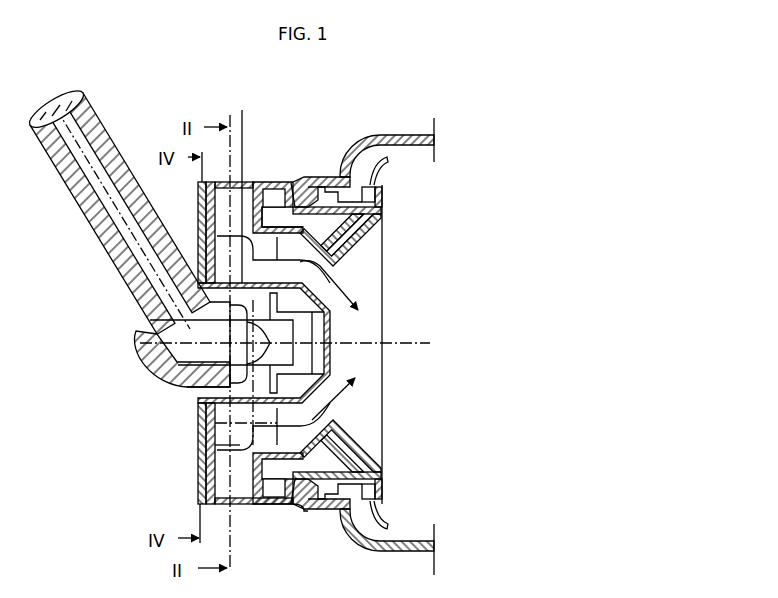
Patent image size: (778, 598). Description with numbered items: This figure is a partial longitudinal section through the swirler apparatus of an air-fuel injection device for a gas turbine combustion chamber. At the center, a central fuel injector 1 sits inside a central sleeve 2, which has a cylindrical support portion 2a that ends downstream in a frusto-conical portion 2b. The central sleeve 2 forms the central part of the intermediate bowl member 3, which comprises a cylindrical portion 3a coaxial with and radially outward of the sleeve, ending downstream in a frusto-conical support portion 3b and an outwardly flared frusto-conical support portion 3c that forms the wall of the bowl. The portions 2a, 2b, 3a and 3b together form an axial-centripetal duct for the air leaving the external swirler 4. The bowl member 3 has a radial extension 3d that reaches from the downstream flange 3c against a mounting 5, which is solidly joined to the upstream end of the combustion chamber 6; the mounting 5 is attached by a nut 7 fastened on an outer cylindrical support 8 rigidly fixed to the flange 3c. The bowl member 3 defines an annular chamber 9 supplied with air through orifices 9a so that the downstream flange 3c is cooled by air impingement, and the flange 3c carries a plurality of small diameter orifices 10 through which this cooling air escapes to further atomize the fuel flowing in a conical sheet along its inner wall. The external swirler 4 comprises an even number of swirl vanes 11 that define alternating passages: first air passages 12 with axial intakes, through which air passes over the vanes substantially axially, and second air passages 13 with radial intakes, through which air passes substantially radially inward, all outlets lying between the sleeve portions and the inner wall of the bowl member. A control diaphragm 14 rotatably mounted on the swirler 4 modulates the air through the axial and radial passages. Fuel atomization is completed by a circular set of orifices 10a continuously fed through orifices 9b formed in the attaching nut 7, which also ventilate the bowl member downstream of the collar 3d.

The central fuel injector 1 is at (245, 347).
The central sleeve 2 is at (198, 485).
The cylindrical support portion 2a is at (196, 402).
The frusto-conical portion 2b is at (350, 296).
The intermediate bowl member 3 is at (384, 380).
The cylindrical portion 3a is at (283, 510).
The frusto-conical support portion 3b is at (350, 437).
The outwardly flared frusto-conical support portion 3c is at (373, 463).
The radial extension 3d is at (386, 207).
The external swirler 4 is at (226, 442).
The mounting 5 is at (385, 200).
The combustion chamber 6 is at (381, 134).
The nut 7 is at (297, 513).
The outer cylindrical support 8 is at (313, 513).
The annular chamber 9 is at (295, 223).
The orifices 9a is at (268, 181).
The orifices 9b is at (301, 181).
The small diameter orifices 10 is at (357, 236).
The circular set of orifices 10a is at (384, 218).
The swirl vanes 11 is at (196, 192).
The first air passages 12 is at (197, 424).
The second air passages 13 is at (244, 187).
The control diaphragm 14 is at (198, 508).